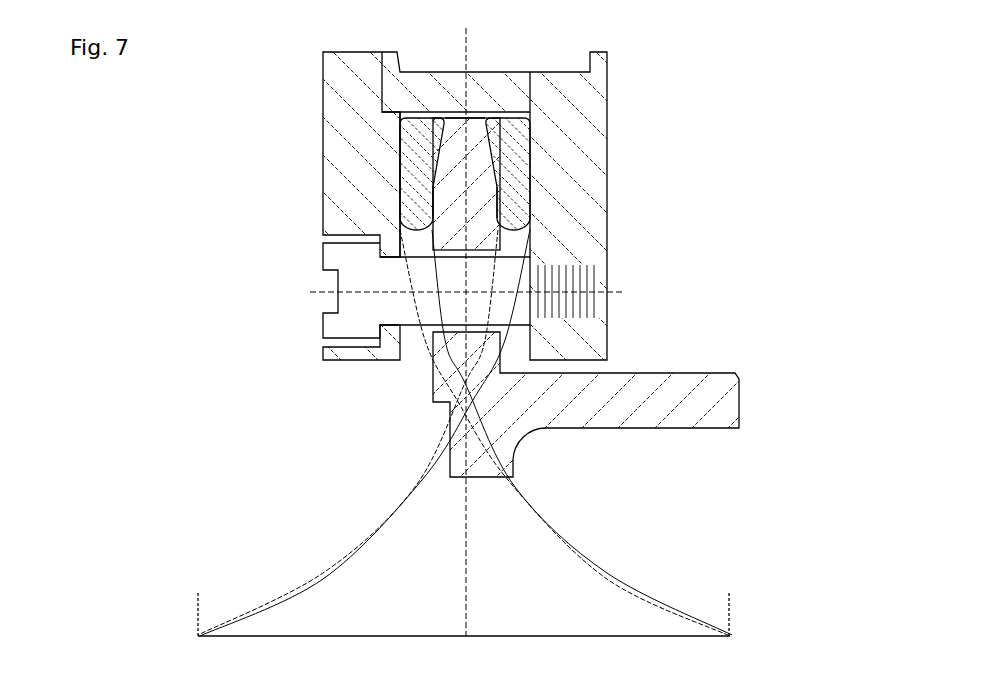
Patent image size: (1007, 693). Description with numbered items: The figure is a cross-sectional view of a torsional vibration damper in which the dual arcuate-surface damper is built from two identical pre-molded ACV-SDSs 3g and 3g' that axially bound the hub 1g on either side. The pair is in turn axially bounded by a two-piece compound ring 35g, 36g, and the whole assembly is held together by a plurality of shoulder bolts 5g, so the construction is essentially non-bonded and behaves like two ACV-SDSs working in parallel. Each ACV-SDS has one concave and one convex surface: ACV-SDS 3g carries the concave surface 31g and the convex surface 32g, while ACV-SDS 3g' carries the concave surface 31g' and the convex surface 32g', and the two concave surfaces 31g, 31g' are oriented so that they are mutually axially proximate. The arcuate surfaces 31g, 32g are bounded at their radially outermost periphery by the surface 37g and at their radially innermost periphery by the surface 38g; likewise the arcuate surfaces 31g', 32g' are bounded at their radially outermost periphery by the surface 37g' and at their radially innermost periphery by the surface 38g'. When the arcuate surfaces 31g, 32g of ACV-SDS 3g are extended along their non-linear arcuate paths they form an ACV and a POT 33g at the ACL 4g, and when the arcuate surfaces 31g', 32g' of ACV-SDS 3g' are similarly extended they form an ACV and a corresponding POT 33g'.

The hub 1g is at (692, 383).
The ACV-SDS 3g is at (443, 172).
The ACV-SDS 3g' is at (494, 177).
The ACL 4g is at (577, 637).
The shoulder bolt 5g is at (353, 273).
The concave arcuate surface 31g is at (328, 179).
The concave arcuate surface 31g' is at (606, 179).
The convex arcuate surface 32g is at (300, 173).
The convex arcuate surface 32g' is at (630, 167).
The POT 33g is at (770, 582).
The POT 33g' is at (243, 580).
The compound ring piece 35g is at (353, 78).
The compound ring piece 36g is at (590, 95).
The radially outermost bounding surface 37g is at (471, 131).
The radially outermost bounding surface 37g' is at (504, 60).
The radially innermost bounding surface 38g is at (551, 433).
The radially innermost bounding surface 38g' is at (450, 433).